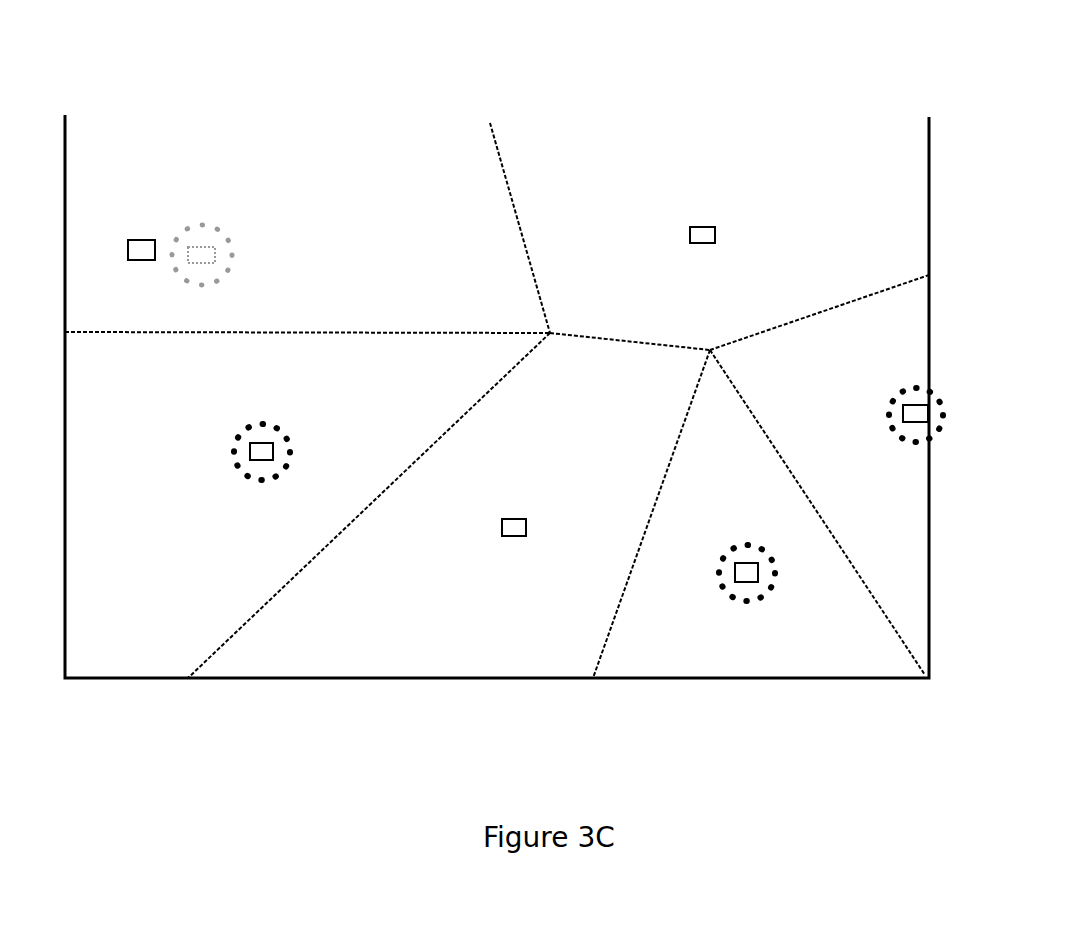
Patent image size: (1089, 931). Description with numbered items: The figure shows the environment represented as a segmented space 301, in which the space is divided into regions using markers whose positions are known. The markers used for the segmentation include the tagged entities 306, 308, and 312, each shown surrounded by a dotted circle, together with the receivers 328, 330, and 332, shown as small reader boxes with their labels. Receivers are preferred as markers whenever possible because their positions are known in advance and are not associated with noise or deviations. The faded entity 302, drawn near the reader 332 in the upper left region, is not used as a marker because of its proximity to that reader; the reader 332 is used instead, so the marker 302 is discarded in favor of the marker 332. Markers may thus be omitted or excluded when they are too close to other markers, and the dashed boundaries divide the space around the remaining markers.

The segmented space 301 is at (809, 72).
The reader 332 is at (132, 188).
The entity 302 is at (230, 176).
The reader 328 is at (758, 180).
The entity 308 is at (238, 500).
The receiver 330 is at (478, 500).
The entity 312 is at (800, 563).
The entity 306 is at (977, 425).